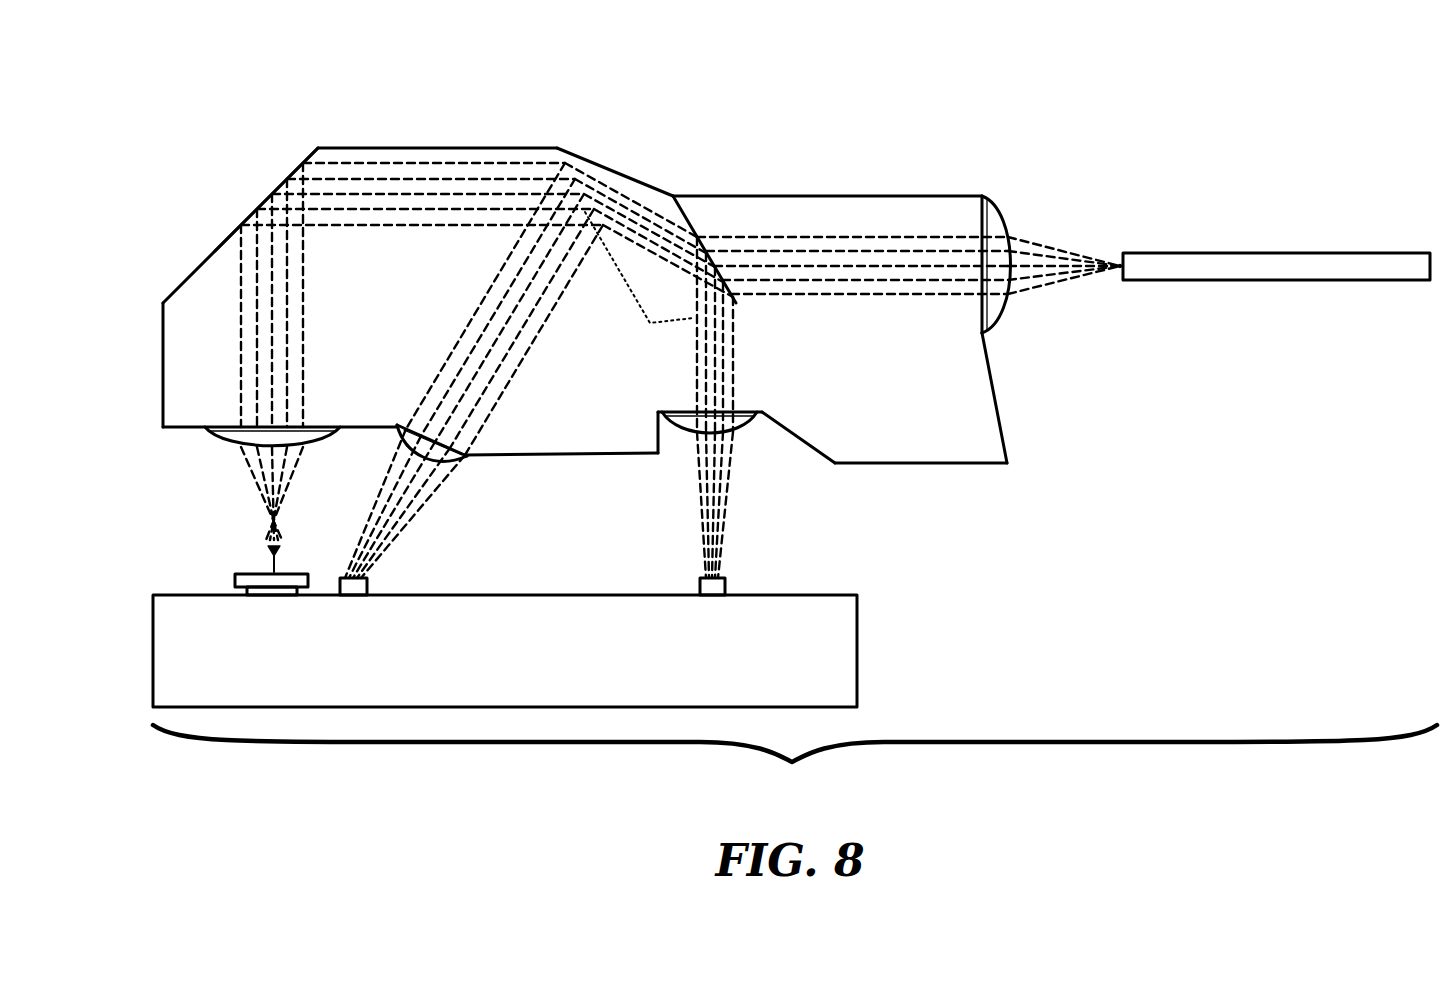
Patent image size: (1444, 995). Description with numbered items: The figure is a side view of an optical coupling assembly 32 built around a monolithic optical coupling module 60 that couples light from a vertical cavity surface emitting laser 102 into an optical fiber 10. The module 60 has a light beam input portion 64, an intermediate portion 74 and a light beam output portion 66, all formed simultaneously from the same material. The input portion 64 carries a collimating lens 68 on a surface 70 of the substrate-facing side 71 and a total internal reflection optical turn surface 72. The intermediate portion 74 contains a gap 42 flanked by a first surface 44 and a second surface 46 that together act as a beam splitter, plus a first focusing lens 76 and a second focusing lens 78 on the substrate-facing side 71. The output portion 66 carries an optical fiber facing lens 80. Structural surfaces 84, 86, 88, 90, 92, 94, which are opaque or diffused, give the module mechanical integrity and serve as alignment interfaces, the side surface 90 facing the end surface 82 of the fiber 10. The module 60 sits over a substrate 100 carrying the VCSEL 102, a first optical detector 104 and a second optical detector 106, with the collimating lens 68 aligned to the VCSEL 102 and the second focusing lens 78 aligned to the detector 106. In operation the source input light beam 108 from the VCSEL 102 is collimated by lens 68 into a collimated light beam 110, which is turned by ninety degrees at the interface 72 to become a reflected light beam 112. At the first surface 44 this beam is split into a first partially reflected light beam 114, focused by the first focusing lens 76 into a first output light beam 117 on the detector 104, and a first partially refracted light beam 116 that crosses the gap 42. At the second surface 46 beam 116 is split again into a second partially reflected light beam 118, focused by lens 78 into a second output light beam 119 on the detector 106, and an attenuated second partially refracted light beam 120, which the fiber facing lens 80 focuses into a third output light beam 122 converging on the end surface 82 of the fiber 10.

The optical fiber 10 is at (1275, 258).
The optical coupling assembly 32 is at (795, 762).
The gap 42 is at (588, 170).
The first surface 44 is at (615, 294).
The second surface 46 is at (700, 204).
The optical coupling module 60 is at (794, 82).
The light beam input portion 64 is at (268, 186).
The light beam output portion 66 is at (925, 158).
The collimating lens 68 is at (324, 445).
The surface 70 is at (186, 432).
The substrate-facing side 71 is at (570, 475).
The total internal reflection optical turn surface 72 is at (205, 262).
The intermediate portion 74 is at (578, 112).
The first focusing lens 76 is at (470, 450).
The second focusing lens 78 is at (744, 430).
The optical fiber facing lens 80 is at (1004, 320).
The end surface 82 is at (1120, 272).
The structural surface 84 is at (163, 362).
The structural surface 86 is at (448, 147).
The structural surface 88 is at (835, 196).
The side surface 90 is at (1000, 415).
The structural surface 92 is at (920, 470).
The structural surface 94 is at (512, 460).
The substrate 100 is at (478, 664).
The vertical cavity surface emitting laser (VCSEL) 102 is at (235, 578).
The first optical detector 104 is at (368, 586).
The second optical detector 106 is at (727, 586).
The source input light beam 108 is at (255, 508).
The collimated light beam 110 is at (305, 318).
The reflected light beam 112 is at (390, 230).
The first partially reflected light beam 114 is at (525, 345).
The first partially refracted light beam 116 is at (648, 200).
The first output light beam 117 is at (425, 488).
The second partially reflected light beam 118 is at (730, 305).
The second output light beam 119 is at (696, 470).
The second partially refracted light beam 120 is at (858, 305).
The third output light beam 122 is at (1085, 250).